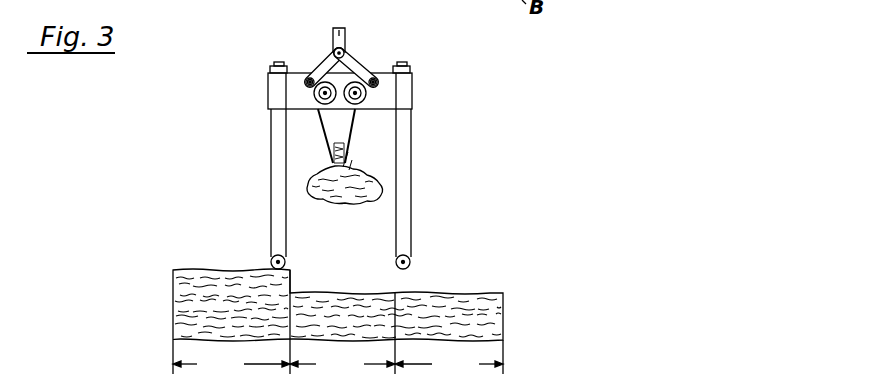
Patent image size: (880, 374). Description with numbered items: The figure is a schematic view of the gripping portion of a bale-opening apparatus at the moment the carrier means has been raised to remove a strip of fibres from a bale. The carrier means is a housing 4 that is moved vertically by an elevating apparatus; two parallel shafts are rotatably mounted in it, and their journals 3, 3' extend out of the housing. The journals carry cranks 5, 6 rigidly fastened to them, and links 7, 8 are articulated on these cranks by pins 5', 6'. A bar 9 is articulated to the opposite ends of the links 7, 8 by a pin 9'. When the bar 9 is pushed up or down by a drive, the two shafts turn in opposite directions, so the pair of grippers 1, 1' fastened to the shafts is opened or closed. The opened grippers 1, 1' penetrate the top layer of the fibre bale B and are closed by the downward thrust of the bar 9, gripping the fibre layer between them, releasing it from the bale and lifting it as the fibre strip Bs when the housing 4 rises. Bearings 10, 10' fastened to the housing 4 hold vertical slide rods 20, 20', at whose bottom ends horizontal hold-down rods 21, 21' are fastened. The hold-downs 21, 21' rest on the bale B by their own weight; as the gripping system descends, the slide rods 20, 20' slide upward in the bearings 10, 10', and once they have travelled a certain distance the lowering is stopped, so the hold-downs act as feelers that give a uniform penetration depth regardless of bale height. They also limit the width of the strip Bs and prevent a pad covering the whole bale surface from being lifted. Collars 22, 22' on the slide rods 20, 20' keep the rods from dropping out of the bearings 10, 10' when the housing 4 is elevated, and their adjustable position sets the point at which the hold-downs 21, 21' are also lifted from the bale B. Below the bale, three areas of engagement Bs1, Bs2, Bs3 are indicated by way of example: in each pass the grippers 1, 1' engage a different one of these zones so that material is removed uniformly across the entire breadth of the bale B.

The gripper 1 is at (320, 139).
The gripper 1' is at (366, 140).
The journal 3 is at (311, 109).
The journal 3' is at (365, 113).
The housing 4 is at (337, 82).
The crank 5 is at (264, 116).
The pin 5' is at (290, 59).
The crank 6 is at (411, 114).
The pin 6' is at (392, 60).
The link 7 is at (323, 65).
The link 8 is at (357, 67).
The bar 9 is at (347, 18).
The pin 9' is at (358, 36).
The bearing 10 is at (307, 94).
The bearing 10' is at (435, 94).
The slide rod 20 is at (244, 183).
The slide rod 20' is at (435, 183).
The hold-down rod 21 is at (243, 247).
The hold-down rod 21' is at (437, 247).
The collar 22 is at (245, 68).
The collar 22' is at (434, 73).
The fibre bale B is at (488, 317).
The fibre strip Bs is at (347, 196).
The area of engagement Bs1 is at (449, 357).
The area of engagement Bs2 is at (342, 333).
The area of engagement Bs3 is at (231, 322).